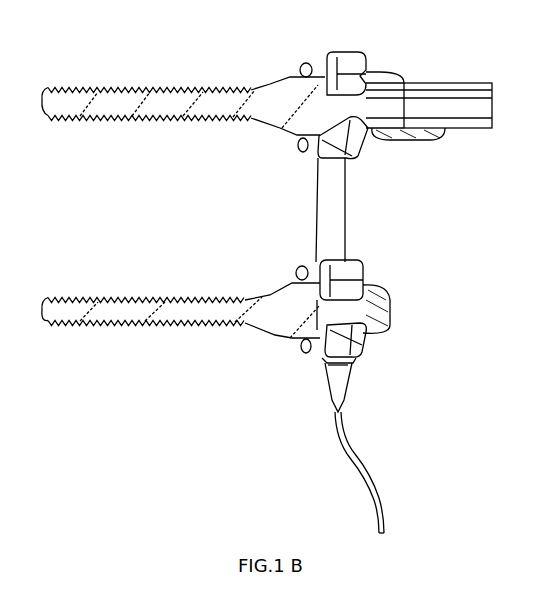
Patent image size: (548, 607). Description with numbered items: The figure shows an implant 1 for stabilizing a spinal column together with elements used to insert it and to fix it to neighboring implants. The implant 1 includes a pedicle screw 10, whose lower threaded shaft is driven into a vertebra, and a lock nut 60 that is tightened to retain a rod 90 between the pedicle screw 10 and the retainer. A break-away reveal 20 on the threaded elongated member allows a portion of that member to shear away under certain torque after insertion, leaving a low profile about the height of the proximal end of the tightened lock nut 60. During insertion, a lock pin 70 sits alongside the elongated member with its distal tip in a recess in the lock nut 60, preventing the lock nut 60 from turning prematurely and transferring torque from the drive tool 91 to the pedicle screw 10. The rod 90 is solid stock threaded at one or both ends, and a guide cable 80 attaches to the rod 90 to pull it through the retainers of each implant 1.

The implant 1 is at (151, 73).
The pedicle screw 10 is at (129, 122).
The break-away reveal 20 is at (390, 118).
The lock nut 60 is at (384, 83).
The lock pin 70 is at (416, 76).
The guide cable 80 is at (364, 465).
The rod 90 is at (312, 240).
The drive tool 91 is at (445, 132).